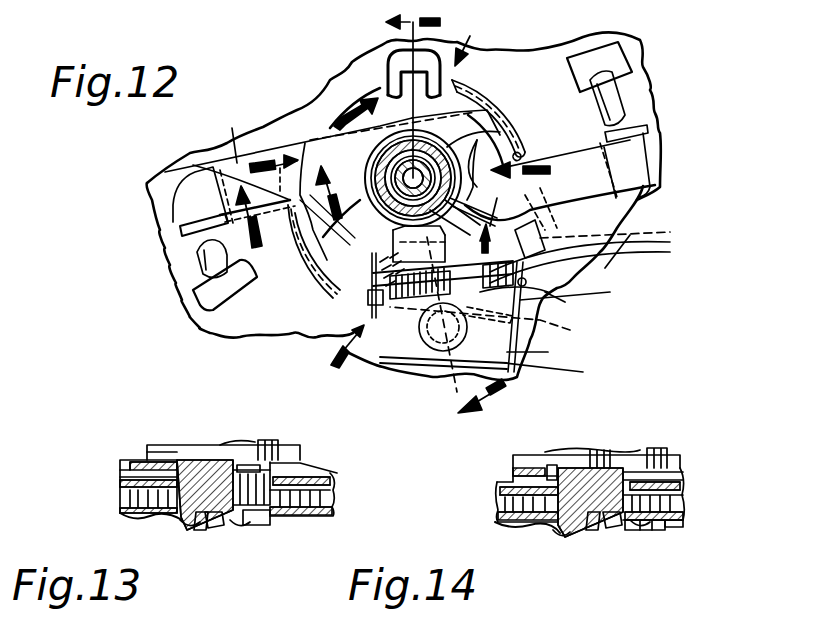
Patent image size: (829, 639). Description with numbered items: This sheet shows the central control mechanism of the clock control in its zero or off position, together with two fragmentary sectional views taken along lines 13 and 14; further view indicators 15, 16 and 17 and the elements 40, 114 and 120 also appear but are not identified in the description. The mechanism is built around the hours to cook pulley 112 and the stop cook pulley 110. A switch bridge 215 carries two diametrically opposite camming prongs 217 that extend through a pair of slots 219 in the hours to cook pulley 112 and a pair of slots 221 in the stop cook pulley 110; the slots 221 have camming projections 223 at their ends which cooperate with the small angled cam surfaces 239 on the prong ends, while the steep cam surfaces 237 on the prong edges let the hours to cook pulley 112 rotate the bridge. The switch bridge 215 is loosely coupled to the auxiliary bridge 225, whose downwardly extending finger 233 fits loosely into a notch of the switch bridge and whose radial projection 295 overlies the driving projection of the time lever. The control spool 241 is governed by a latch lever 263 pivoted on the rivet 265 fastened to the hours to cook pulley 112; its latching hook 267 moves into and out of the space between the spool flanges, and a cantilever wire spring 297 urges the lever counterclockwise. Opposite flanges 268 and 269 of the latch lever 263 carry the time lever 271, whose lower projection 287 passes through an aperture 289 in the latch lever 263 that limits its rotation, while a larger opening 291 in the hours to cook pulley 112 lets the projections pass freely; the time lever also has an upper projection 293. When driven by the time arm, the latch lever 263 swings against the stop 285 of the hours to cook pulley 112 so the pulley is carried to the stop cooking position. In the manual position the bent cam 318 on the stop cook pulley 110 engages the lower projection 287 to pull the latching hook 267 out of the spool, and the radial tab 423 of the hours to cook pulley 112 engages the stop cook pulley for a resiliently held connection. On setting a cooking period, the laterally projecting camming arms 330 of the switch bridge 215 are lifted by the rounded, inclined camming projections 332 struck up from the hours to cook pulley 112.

In FIG. 12, the section line 13 is at (542, 98).
In FIG. 12, the section line 14 is at (308, 259).
In FIG. 12, the direction of rotation arrow 15 is at (404, 170).
In FIG. 12, the section line 16- 16 is at (446, 215).
In FIG. 12, the direction arrow 17 is at (292, 207).
In FIG. 13, the fastener 40 is at (243, 528).
In FIG. 14, the fastener 40 is at (640, 532).
In FIG. 13, the stop cook pulley 110 is at (140, 515).
In FIG. 14, the stop cook pulley 110 is at (530, 527).
In FIG. 12, the hours to cook pulley 112 is at (690, 108).
In FIG. 13, the hours to cook pulley 112 is at (372, 487).
In FIG. 14, the hours to cook pulley 112 is at (497, 488).
In FIG. 13, the flange 114 is at (147, 520).
In FIG. 14, the flange 114 is at (683, 525).
In FIG. 12, the cover plate 120 is at (630, 40).
In FIG. 13, the cover plate 120 is at (300, 470).
In FIG. 14, the cover plate 120 is at (512, 478).
In FIG. 12, the switch bridge 215 is at (240, 128).
In FIG. 13, the switch bridge 215 is at (333, 445).
In FIG. 14, the switch bridge 215 is at (733, 488).
In FIG. 12, the camming prongs 217 is at (485, 122).
In FIG. 13, the camming prongs 217 is at (205, 458).
In FIG. 14, the camming prongs 217 is at (608, 468).
In FIG. 12, the slots 219 is at (480, 88).
In FIG. 13, the slots 219 is at (272, 457).
In FIG. 14, the slots 219 is at (655, 468).
In FIG. 13, the slots 221 is at (210, 518).
In FIG. 14, the slots 221 is at (614, 528).
In FIG. 13, the camming projections 223 is at (182, 525).
In FIG. 14, the camming projections 223 is at (555, 532).
In FIG. 12, the auxiliary bridge 225 is at (318, 140).
In FIG. 13, the auxiliary bridge 225 is at (163, 455).
In FIG. 14, the auxiliary bridge 225 is at (600, 441).
In FIG. 12, the finger 233 is at (193, 165).
In FIG. 14, the finger 233 is at (552, 463).
In FIG. 13, the steep cam surfaces 237 is at (125, 468).
In FIG. 14, the steep cam surfaces 237 is at (500, 505).
In FIG. 13, the cam surfaces 239 is at (205, 527).
In FIG. 14, the cam surfaces 239 is at (598, 528).
In FIG. 12, the control spool 241 is at (447, 147).
In FIG. 12, the latch lever 263 is at (583, 362).
In FIG. 12, the rivet 265 is at (443, 347).
In FIG. 12, the latching hook 267 is at (515, 152).
In FIG. 12, the flange 268 is at (370, 266).
In FIG. 12, the flange 269 is at (540, 302).
In FIG. 12, the time lever 271 is at (628, 274).
In FIG. 12, the stop 285 is at (553, 222).
In FIG. 12, the lower projection 287 is at (585, 293).
In FIG. 12, the aperture 289 is at (590, 267).
In FIG. 12, the opening 291 is at (499, 324).
In FIG. 12, the upper projection 293 is at (594, 254).
In FIG. 12, the radial projection 295 is at (417, 240).
In FIG. 12, the cantilever wire spring 297 is at (563, 373).
In FIG. 12, the bent cam 318 is at (638, 241).
In FIG. 12, the camming arms 330 is at (180, 227).
In FIG. 12, the camming projections 332 is at (217, 260).
In FIG. 12, the radial tab 423 is at (398, 70).